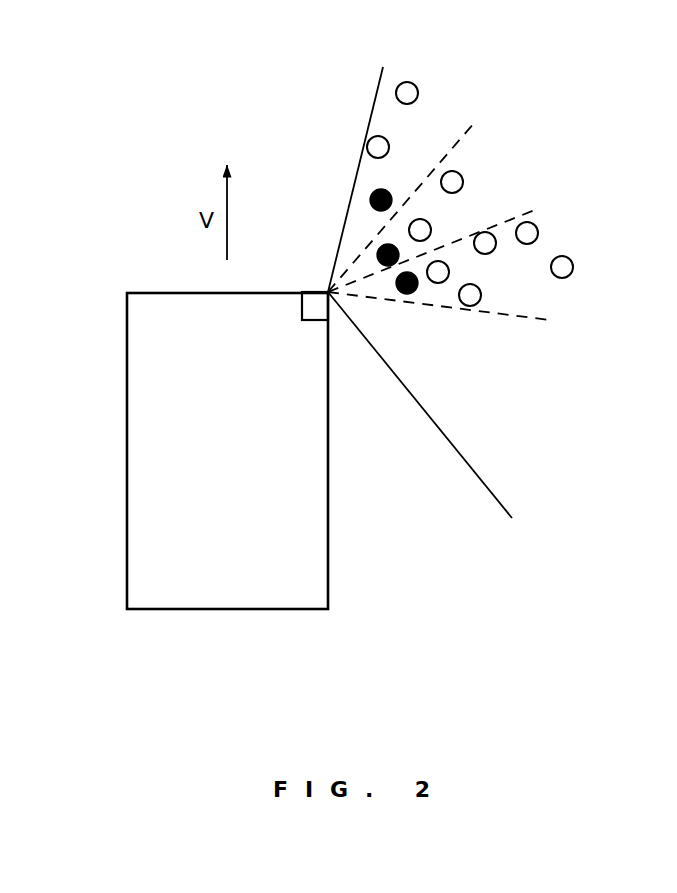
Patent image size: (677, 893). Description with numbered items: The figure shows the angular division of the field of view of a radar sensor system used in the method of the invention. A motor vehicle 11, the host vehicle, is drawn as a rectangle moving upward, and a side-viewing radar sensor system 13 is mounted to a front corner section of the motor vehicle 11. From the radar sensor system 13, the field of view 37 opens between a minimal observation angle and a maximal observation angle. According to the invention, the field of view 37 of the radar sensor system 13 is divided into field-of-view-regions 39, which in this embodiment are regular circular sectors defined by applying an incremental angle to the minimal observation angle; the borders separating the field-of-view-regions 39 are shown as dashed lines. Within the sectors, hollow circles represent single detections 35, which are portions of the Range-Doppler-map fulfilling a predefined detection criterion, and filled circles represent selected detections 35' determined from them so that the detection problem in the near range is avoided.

The motor vehicle 11 is at (238, 450).
The radar sensor system 13 is at (313, 293).
The single detections 35 is at (474, 235).
The selected detections 35' is at (365, 178).
The field of view 37 is at (428, 428).
The field-of-view-regions 39 is at (516, 161).